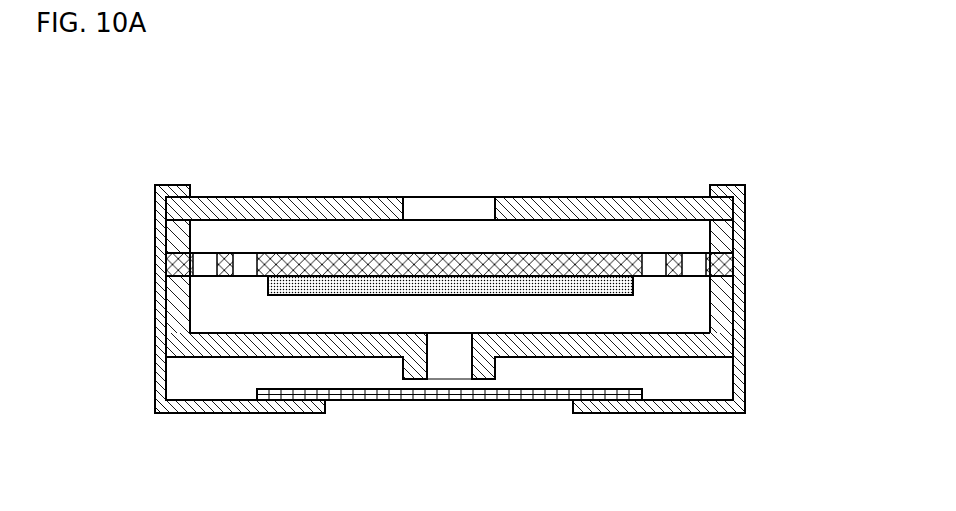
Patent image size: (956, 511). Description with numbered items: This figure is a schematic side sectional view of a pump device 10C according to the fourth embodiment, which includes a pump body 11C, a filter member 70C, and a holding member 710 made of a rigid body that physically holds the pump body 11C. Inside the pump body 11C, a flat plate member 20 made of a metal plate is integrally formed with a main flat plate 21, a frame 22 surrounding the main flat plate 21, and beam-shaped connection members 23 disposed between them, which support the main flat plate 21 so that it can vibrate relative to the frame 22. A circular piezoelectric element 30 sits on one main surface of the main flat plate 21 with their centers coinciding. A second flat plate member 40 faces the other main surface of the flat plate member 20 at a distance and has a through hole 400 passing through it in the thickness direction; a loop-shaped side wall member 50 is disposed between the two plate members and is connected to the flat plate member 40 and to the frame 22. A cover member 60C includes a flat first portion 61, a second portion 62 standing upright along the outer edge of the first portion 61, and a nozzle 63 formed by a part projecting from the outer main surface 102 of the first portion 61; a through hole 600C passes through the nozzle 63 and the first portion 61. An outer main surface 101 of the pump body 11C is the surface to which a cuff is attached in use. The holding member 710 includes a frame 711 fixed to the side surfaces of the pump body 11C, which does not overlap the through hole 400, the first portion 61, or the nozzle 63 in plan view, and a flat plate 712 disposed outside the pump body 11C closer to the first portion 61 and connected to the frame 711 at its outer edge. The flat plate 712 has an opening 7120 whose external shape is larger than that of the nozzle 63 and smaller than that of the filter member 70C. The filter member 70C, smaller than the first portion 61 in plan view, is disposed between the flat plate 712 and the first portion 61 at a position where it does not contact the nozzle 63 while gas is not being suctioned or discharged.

The pump device 10C is at (738, 143).
The pump body 11C is at (752, 183).
The flat plate member 20 is at (777, 246).
The main flat plate 21 is at (552, 262).
The frame 22 is at (723, 264).
The connection members 23 is at (223, 277).
The piezoelectric element 30 is at (300, 285).
The flat plate member 40 is at (449, 184).
The through hole 400 is at (438, 207).
The side wall member 50 is at (175, 236).
The cover member 60C is at (791, 342).
The first portion 61 is at (475, 397).
The second portion 62 is at (722, 326).
The nozzle 63 is at (487, 368).
The through hole 600C is at (440, 362).
The filter member 70C is at (611, 400).
The outer main surface 101 is at (200, 196).
The outer main surface 102 is at (183, 358).
The holding member 710 is at (421, 314).
The frame 711 is at (157, 389).
The flat plate 712 is at (200, 405).
The opening 7120 is at (333, 415).